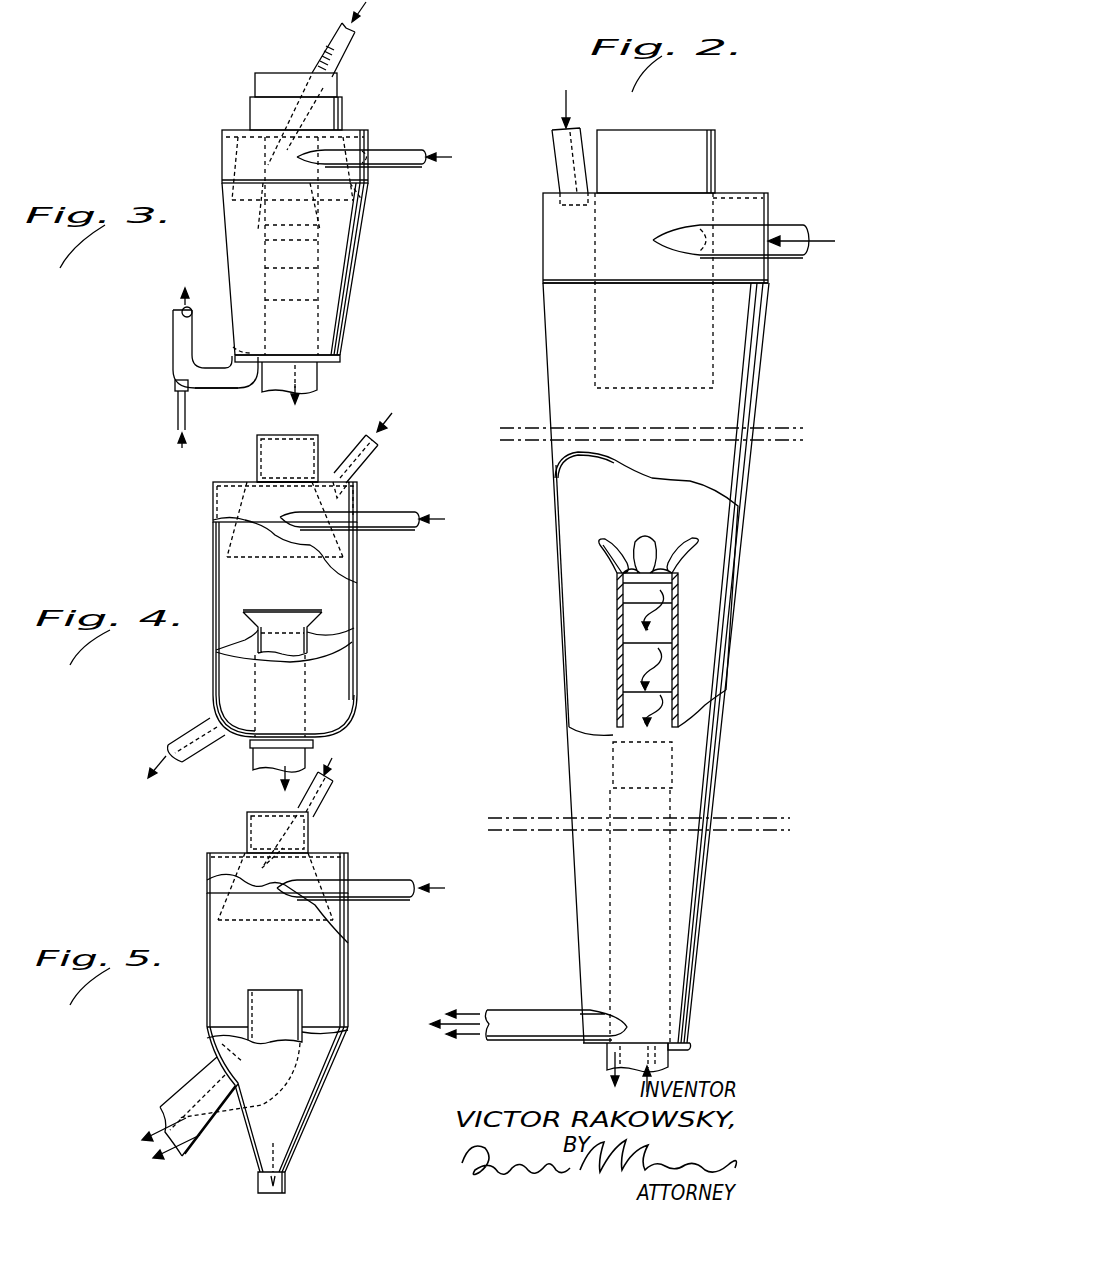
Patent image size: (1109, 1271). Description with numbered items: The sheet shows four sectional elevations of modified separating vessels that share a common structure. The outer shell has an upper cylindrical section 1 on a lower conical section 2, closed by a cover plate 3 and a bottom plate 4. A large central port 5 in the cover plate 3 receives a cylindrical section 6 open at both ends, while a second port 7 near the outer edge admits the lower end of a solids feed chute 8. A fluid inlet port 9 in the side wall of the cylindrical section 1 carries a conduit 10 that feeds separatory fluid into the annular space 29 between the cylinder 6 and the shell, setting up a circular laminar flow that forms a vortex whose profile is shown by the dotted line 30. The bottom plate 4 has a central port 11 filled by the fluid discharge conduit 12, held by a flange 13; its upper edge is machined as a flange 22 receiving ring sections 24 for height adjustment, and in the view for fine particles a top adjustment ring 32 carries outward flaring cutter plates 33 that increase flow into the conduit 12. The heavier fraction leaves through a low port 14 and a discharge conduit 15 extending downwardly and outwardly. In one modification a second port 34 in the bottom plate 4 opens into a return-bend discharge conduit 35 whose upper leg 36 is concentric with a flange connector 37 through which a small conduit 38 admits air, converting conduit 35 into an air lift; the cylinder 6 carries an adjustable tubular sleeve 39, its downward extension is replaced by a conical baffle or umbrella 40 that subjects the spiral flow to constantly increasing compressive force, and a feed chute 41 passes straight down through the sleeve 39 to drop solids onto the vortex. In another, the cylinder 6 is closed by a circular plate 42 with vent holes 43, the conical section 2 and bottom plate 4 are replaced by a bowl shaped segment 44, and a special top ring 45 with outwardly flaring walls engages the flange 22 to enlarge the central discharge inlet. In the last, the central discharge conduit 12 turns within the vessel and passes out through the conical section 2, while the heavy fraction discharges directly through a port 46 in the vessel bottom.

In FIG. 2, the upper cylindrical section 1 is at (545, 276).
In FIG. 4, the upper cylindrical section 1 is at (360, 599).
In FIG. 2, the lower conical section 2 is at (545, 368).
In FIG. 3, the lower conical section 2 is at (358, 232).
In FIG. 5, the lower conical section 2 is at (210, 1053).
In FIG. 2, the cover plate 3 is at (735, 193).
In FIG. 3, the cover plate 3 is at (355, 132).
In FIG. 4, the cover plate 3 is at (232, 482).
In FIG. 5, the cover plate 3 is at (277, 940).
In FIG. 2, the bottom plate 4 is at (693, 1048).
In FIG. 3, the bottom plate 4 is at (343, 356).
In FIG. 2, the large central port 5 is at (695, 193).
In FIG. 3, the large central port 5 is at (260, 130).
In FIG. 2, the cylindrical section 6 is at (715, 130).
In FIG. 3, the cylindrical section 6 is at (345, 112).
In FIG. 4, the cylindrical section 6 is at (287, 464).
In FIG. 5, the cylindrical section 6 is at (247, 836).
In FIG. 2, the second port 7 is at (560, 190).
In FIG. 2, the solids feed chute 8 is at (573, 125).
In FIG. 4, the solids feed chute 8 is at (372, 457).
In FIG. 2, the fluid inlet port 9 is at (688, 248).
In FIG. 2, the conduit 10 is at (786, 260).
In FIG. 3, the conduit 10 is at (400, 150).
In FIG. 4, the conduit 10 is at (385, 528).
In FIG. 5, the conduit 10 is at (385, 898).
In FIG. 2, the large central port 11 is at (676, 1042).
In FIG. 3, the large central port 11 is at (312, 352).
In FIG. 2, the fluid discharge conduit 12 is at (605, 1060).
In FIG. 3, the fluid discharge conduit 12 is at (322, 305).
In FIG. 4, the fluid discharge conduit 12 is at (310, 672).
In FIG. 5, the fluid discharge conduit 12 is at (290, 992).
In FIG. 4, the flange 13 is at (318, 745).
In FIG. 2, the port 14 is at (583, 1010).
In FIG. 4, the port 14 is at (217, 723).
In FIG. 2, the discharge conduit 15 is at (503, 1010).
In FIG. 4, the discharge conduit 15 is at (170, 752).
In FIG. 4, the flange 22 is at (322, 630).
In FIG. 2, the ring section 24 is at (678, 620).
In FIG. 2, the annular space 29 is at (575, 240).
In FIG. 3, the annular space 29 is at (235, 158).
In FIG. 4, the annular space 29 is at (350, 503).
In FIG. 5, the annular space 29 is at (350, 866).
In FIG. 3, the vortex profile 30 is at (283, 183).
In FIG. 2, the top adjustment ring 32 is at (680, 574).
In FIG. 2, the cutter plates 33 is at (607, 546).
In FIG. 3, the second port 34 is at (236, 350).
In FIG. 3, the discharge conduit 35 is at (226, 388).
In FIG. 3, the upper leg 36 is at (173, 338).
In FIG. 3, the flange connector 37 is at (175, 386).
In FIG. 3, the small conduit 38 is at (178, 412).
In FIG. 3, the adjustable tubular sleeve 39 is at (268, 80).
In FIG. 3, the conical baffle 40 is at (360, 190).
In FIG. 4, the conical baffle 40 is at (225, 545).
In FIG. 5, the conical baffle 40 is at (225, 900).
In FIG. 3, the feed chute 41 is at (330, 45).
In FIG. 5, the feed chute 41 is at (310, 800).
In FIG. 4, the circular plate 42 is at (312, 437).
In FIG. 4, the vent holes 43 is at (285, 437).
In FIG. 4, the bowl shaped segment 44 is at (360, 701).
In FIG. 4, the top ring 45 is at (245, 637).
In FIG. 5, the port 46 is at (288, 1180).